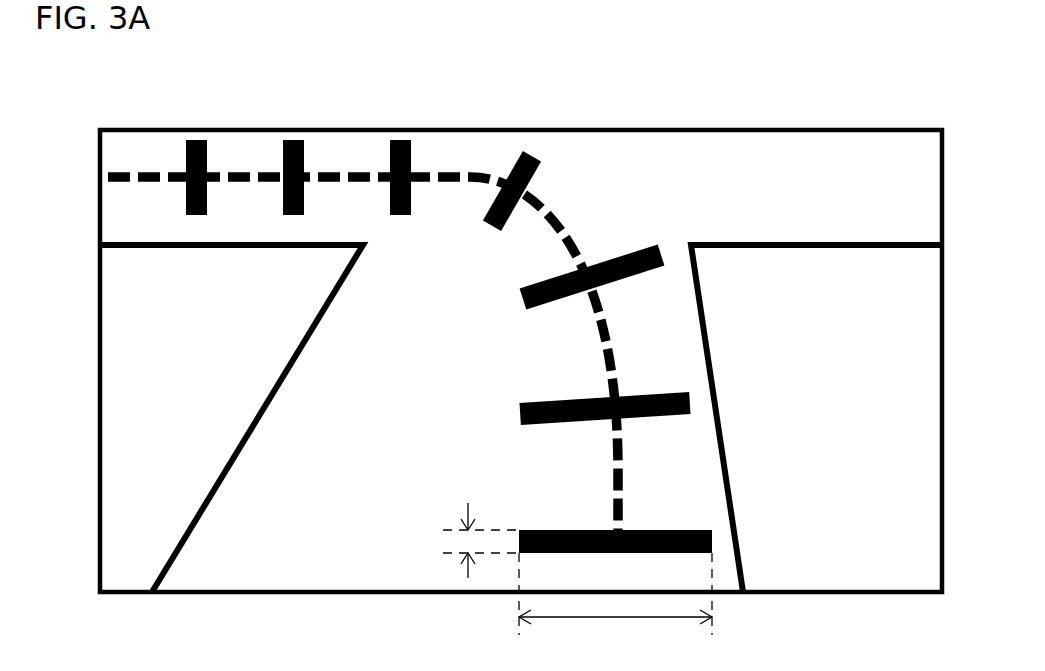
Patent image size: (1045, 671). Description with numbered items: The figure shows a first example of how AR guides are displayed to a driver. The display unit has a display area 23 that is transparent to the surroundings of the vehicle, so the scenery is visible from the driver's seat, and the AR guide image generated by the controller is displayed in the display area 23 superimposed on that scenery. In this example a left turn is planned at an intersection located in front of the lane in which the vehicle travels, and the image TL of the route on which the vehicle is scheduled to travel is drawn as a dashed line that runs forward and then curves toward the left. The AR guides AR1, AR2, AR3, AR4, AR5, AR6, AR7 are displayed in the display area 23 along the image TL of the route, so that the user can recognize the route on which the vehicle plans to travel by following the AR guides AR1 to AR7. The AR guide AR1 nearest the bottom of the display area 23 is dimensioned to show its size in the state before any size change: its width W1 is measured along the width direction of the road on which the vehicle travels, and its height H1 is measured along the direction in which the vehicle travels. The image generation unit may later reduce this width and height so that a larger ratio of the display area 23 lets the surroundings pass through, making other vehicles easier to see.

The display area 23 is at (856, 130).
The image of the route TL is at (575, 243).
The AR guide AR1 is at (713, 541).
The AR guide AR2 is at (690, 403).
The AR guide AR3 is at (662, 257).
The AR guide AR4 is at (527, 153).
The AR guide AR5 is at (402, 140).
The AR guide AR6 is at (297, 140).
The AR guide AR7 is at (198, 140).
The height of the AR guide H1 is at (465, 540).
The width of the AR guide W1 is at (615, 606).